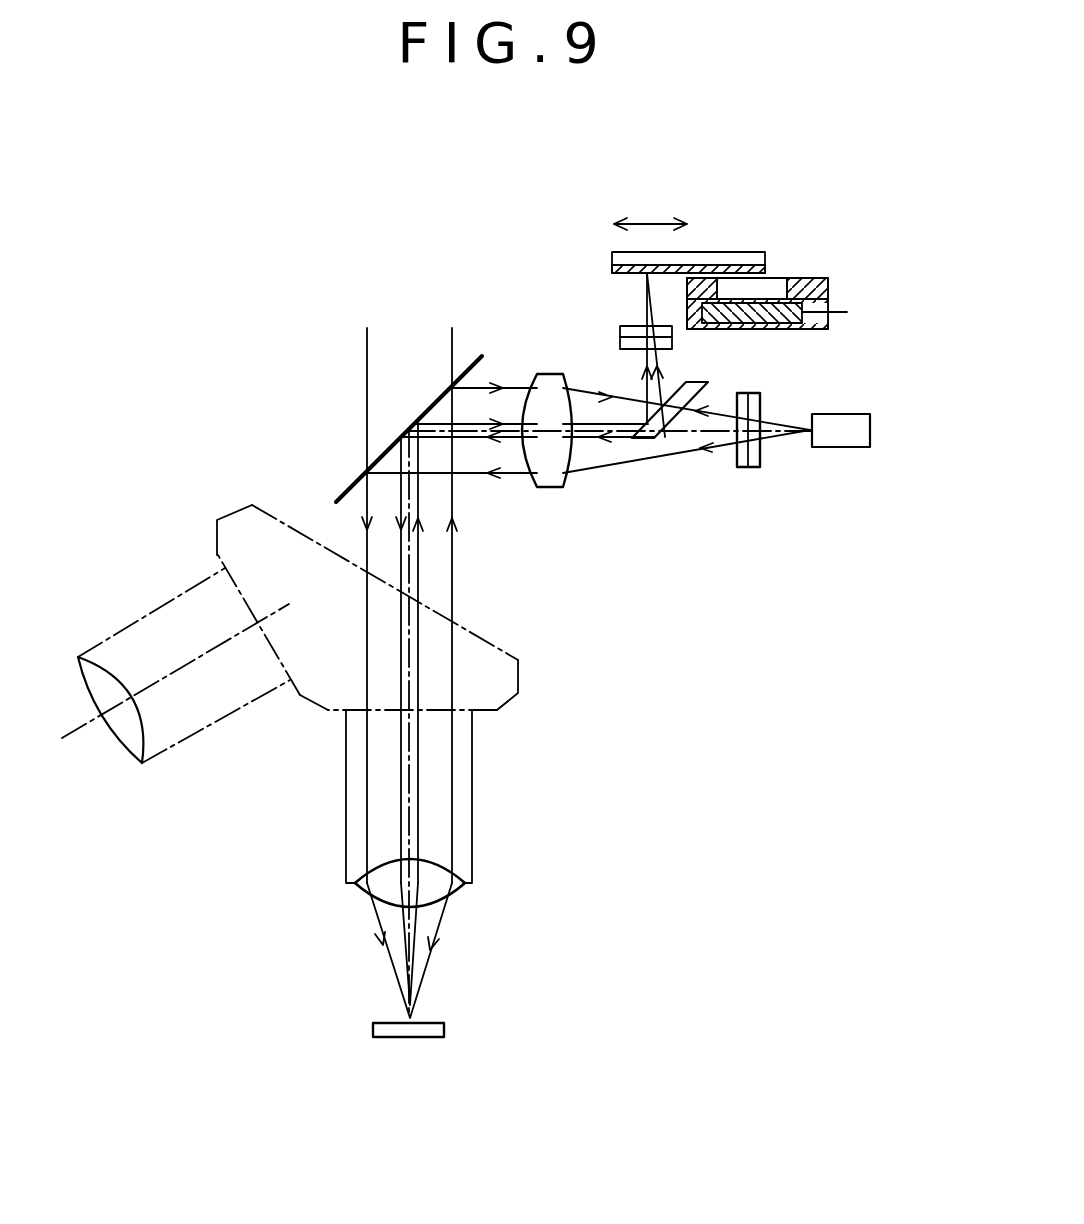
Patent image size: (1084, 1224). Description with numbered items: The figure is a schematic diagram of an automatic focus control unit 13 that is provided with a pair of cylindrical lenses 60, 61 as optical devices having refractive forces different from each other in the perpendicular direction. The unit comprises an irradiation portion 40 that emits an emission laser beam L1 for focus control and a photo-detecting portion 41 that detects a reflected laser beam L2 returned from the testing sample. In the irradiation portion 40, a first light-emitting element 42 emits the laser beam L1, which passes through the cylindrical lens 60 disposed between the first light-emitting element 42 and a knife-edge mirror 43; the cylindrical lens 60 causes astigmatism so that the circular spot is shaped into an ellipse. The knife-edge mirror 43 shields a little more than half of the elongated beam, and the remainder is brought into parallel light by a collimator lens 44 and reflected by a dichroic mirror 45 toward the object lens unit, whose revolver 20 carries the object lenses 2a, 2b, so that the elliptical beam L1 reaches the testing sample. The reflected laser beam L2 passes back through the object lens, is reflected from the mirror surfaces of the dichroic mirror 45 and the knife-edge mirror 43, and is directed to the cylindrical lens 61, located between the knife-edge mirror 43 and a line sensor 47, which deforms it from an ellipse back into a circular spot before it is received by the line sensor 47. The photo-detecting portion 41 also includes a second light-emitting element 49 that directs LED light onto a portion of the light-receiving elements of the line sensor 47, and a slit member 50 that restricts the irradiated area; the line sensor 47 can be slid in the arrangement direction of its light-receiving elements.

The photo-detecting portion 41 is at (745, 225).
The line sensor 47 is at (636, 259).
The slit member 50 is at (775, 291).
The second light-emitting element 49 is at (775, 323).
The cylindrical lens 61 is at (620, 337).
The knife-edge mirror 43 is at (700, 384).
The collimator lens 44 is at (548, 489).
The dichroic mirror 45 is at (350, 488).
The first light-emitting element 42 is at (855, 432).
The cylindrical lens 60 is at (748, 468).
The irradiation portion 40 is at (696, 517).
The automatic focus control unit 13 is at (879, 546).
The emission laser beam L1 is at (640, 463).
The reflected laser beam L2 is at (646, 298).
The revolver 20 is at (498, 682).
The object lens 2b is at (112, 731).
The object lens 2a is at (457, 891).